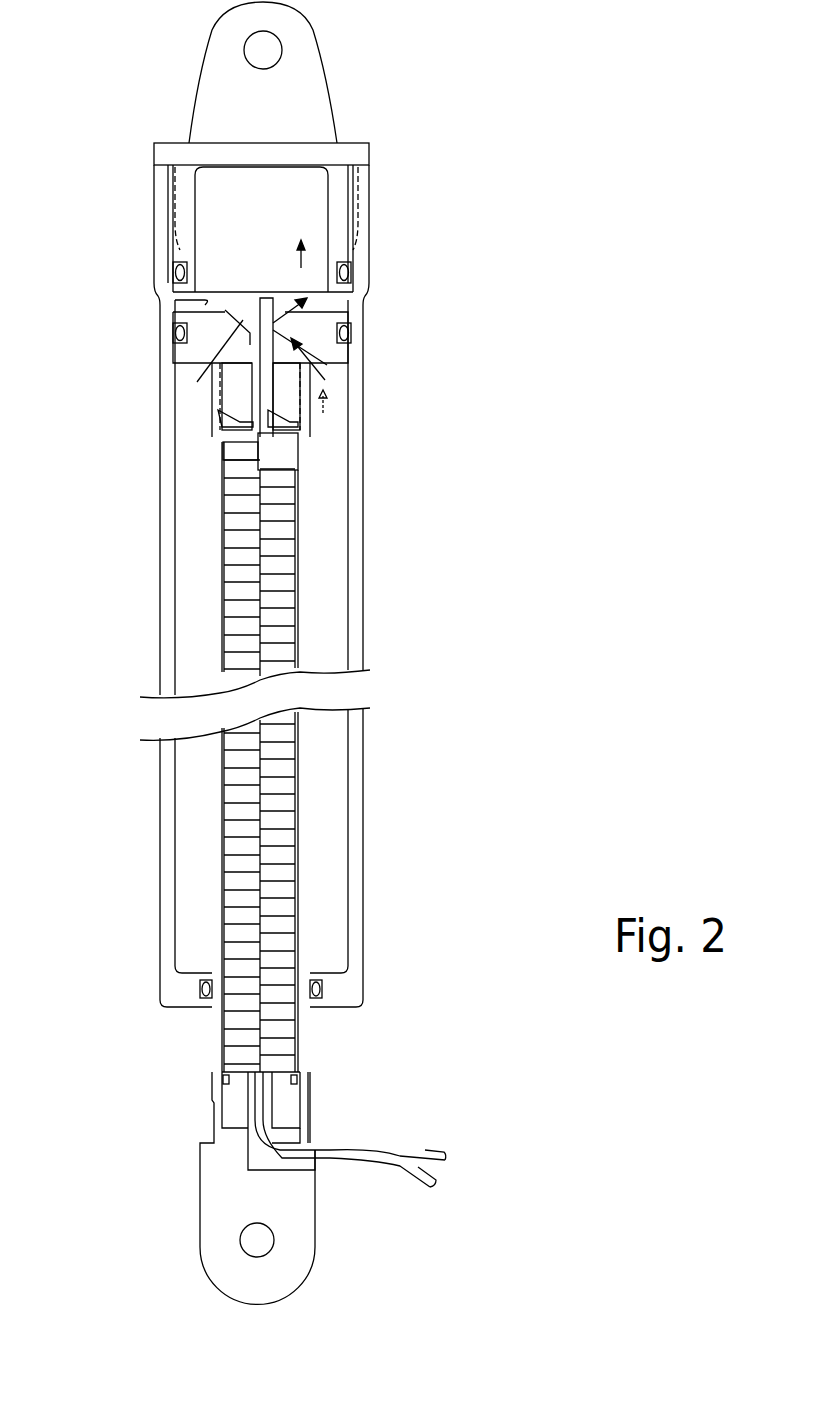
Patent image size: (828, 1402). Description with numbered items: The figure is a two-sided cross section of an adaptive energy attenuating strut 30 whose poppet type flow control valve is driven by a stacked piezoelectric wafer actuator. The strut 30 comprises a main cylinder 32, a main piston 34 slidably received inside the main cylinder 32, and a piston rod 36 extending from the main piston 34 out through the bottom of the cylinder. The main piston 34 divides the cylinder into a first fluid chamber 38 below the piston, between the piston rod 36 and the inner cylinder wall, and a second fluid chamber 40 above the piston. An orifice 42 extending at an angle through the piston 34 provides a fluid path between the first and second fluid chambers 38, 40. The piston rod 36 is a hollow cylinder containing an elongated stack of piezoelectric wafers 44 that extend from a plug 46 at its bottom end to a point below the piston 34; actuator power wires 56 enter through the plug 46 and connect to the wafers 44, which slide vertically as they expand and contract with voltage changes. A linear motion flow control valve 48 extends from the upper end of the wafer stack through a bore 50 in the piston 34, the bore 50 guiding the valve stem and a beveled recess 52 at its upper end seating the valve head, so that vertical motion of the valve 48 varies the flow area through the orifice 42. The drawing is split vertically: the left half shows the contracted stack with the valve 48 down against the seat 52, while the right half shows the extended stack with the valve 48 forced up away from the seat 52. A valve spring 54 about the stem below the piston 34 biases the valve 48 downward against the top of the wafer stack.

The energy attenuating strut 30 is at (515, 198).
The main cylinder 32 is at (158, 615).
The main piston 34 is at (205, 303).
The piston rod 36 is at (208, 1072).
The first fluid chamber 38 is at (328, 557).
The second fluid chamber 40 is at (240, 242).
The orifice 42 is at (317, 347).
The piezoelectric wafers 44 is at (285, 800).
The plug 46 is at (285, 1112).
The flow control valve 48 is at (263, 297).
The bore 50 is at (240, 393).
The beveled recess 52 is at (292, 313).
The valve spring 54 is at (230, 423).
The actuator power wires 56 is at (400, 1150).